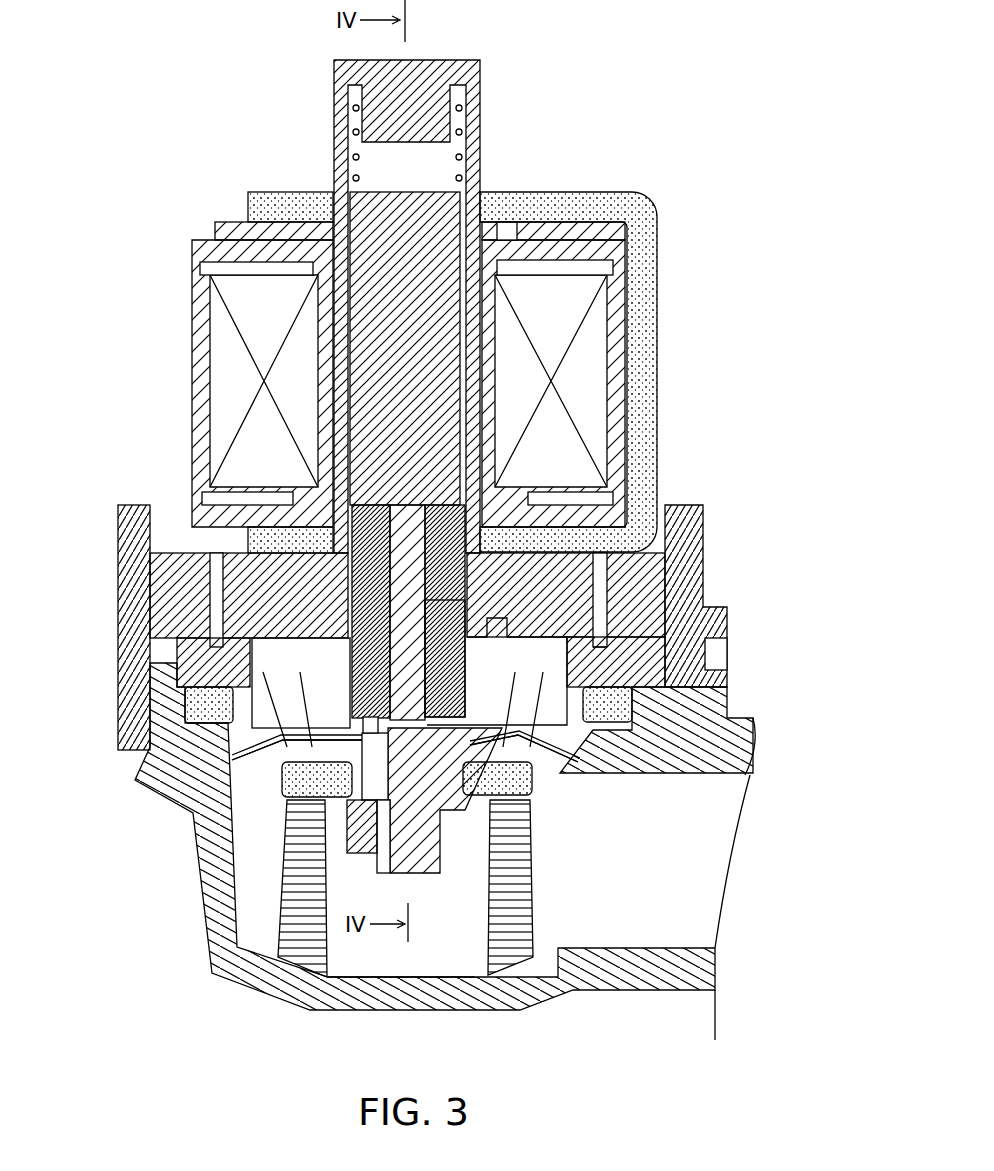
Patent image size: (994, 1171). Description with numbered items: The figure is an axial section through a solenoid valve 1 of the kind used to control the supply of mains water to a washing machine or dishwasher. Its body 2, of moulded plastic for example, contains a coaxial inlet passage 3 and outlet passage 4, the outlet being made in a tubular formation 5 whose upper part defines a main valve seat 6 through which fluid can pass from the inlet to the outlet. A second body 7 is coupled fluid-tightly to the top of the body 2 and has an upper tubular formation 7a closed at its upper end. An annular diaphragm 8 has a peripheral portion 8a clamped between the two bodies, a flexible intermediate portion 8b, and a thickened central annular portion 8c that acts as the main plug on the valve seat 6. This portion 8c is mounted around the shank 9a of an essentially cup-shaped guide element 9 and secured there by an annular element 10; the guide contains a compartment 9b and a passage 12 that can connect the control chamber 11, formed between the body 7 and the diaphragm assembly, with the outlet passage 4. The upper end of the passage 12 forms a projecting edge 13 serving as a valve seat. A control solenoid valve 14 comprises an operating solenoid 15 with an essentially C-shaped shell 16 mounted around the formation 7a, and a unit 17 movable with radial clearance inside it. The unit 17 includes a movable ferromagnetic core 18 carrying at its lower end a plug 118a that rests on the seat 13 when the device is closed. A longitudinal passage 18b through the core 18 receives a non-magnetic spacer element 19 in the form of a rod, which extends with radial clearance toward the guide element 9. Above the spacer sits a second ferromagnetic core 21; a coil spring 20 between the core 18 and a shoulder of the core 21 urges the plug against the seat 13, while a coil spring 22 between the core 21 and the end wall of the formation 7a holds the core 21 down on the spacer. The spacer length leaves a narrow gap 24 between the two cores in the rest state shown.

The solenoid valve 1 is at (128, 192).
The body 2 is at (715, 700).
The inlet passage 3 is at (728, 798).
The outlet passage 4 is at (333, 940).
The tubular formation 5 is at (512, 862).
The main valve seat 6 is at (282, 790).
The second body 7 is at (620, 660).
The upper tubular formation 7a is at (480, 138).
The annular diaphragm 8 is at (560, 782).
The peripheral portion 8a is at (203, 707).
The flexible intermediate portion 8b is at (250, 757).
The thickened central annular portion 8c is at (510, 780).
The guide element 9 is at (322, 655).
The shank 9a is at (437, 780).
The compartment 9b is at (300, 768).
The annular element 10 is at (343, 838).
The control chamber 11 is at (560, 612).
The passage 12 is at (417, 862).
The projecting edge 13 is at (345, 648).
The control solenoid valve 14 is at (168, 423).
The operating solenoid 15 is at (235, 378).
The C-shaped shell 16 is at (290, 200).
The unit 17 is at (340, 605).
The movable core 18 is at (612, 522).
The longitudinal passage 18b is at (440, 582).
The spacer element 19 is at (405, 600).
The coil spring 20 is at (437, 475).
The second ferromagnetic core 21 is at (430, 327).
The coil spring 22 is at (356, 152).
The gap 24 is at (380, 470).
The plug 118a is at (458, 693).